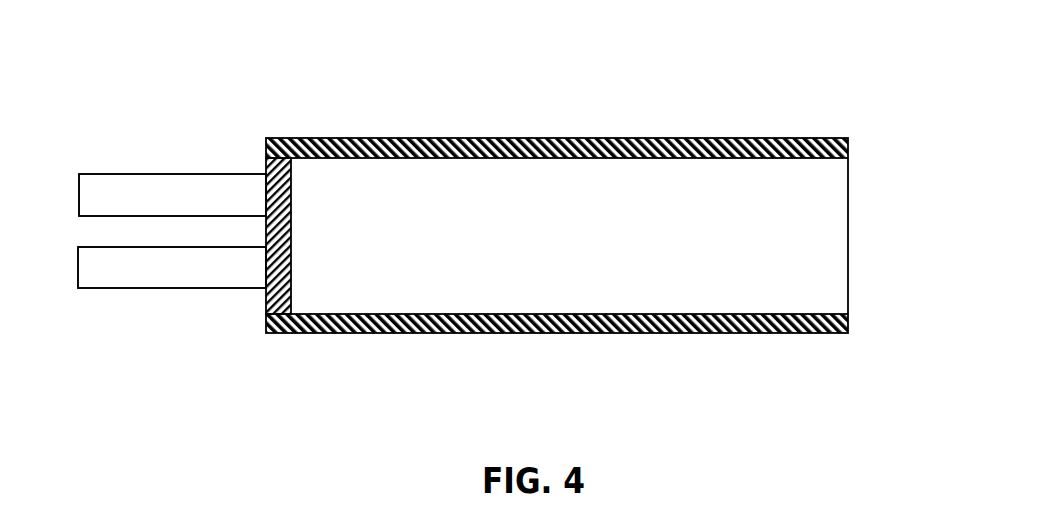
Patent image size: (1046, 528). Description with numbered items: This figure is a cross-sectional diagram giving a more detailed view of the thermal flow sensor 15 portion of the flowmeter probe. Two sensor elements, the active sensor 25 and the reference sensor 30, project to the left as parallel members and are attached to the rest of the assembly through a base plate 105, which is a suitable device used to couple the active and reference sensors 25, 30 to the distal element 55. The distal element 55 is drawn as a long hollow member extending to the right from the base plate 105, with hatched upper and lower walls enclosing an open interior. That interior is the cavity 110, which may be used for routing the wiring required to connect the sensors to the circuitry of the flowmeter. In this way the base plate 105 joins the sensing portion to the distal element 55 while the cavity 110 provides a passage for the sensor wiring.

The thermal flow sensor 15 is at (136, 124).
The active sensor 25 is at (187, 185).
The reference sensor 30 is at (93, 270).
The distal element 55 is at (564, 102).
The base plate 105 is at (264, 302).
The cavity 110 is at (828, 250).